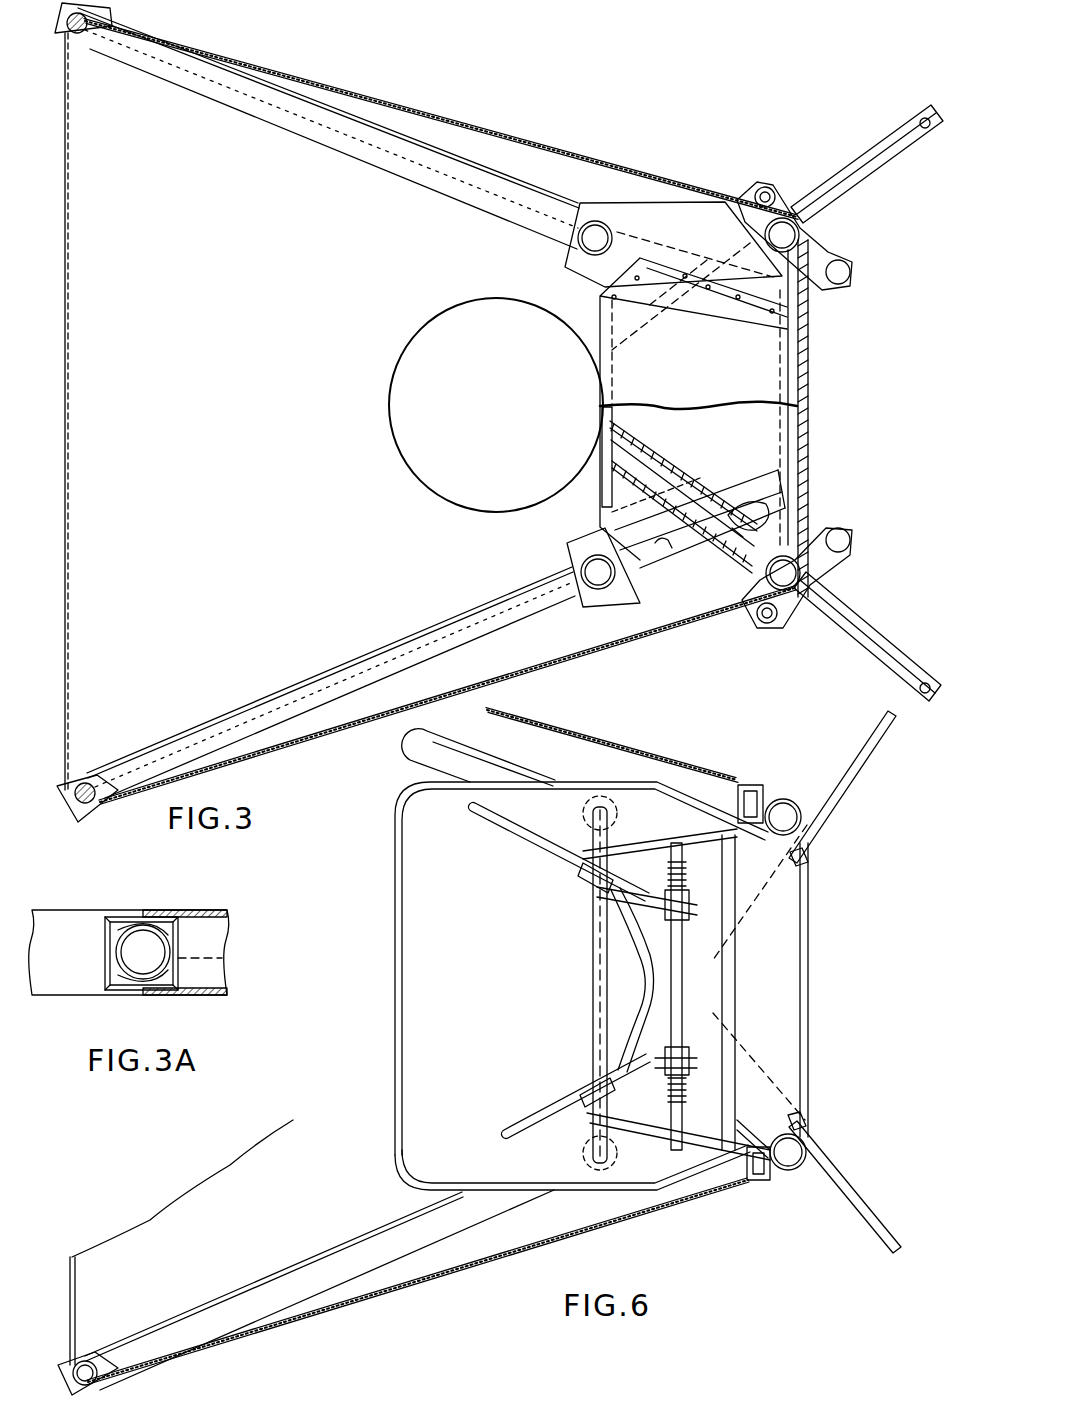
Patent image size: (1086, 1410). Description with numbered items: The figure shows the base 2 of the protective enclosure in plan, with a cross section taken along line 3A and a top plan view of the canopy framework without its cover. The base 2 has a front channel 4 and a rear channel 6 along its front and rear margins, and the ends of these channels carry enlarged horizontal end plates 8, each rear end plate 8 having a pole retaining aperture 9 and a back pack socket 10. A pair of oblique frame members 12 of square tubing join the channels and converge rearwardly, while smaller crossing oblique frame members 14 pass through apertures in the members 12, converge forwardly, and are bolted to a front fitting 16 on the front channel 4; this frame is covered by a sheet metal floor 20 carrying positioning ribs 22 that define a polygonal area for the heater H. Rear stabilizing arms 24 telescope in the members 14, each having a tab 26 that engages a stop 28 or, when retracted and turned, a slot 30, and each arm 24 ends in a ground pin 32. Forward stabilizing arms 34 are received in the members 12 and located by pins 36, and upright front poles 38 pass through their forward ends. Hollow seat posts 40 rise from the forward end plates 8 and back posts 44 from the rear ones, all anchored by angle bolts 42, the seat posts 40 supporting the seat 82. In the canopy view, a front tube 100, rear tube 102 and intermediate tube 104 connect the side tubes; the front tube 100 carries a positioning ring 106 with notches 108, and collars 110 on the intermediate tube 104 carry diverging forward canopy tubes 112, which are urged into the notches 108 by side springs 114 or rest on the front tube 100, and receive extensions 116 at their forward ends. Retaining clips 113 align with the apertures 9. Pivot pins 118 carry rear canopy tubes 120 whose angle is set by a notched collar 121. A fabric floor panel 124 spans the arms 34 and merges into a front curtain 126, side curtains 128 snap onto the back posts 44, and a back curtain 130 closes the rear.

In FIG. 3, the base 2 is at (590, 480).
In FIG. 3, the section line 3A— 3A is at (778, 484).
In FIG. 3, the front channel 4 is at (595, 330).
In FIG. 3, the rear channel 6 is at (790, 430).
In FIG. 3, the end plate 8 is at (600, 200).
In FIG. 3, the pole retaining aperture 9 is at (755, 197).
In FIG. 3, the back pack socket 10 is at (850, 272).
In FIG. 3, the oblique frame member 12 is at (723, 490).
In FIG. 3A, the oblique frame member 12 is at (72, 910).
In FIG. 3, the crossing oblique frame member 14 is at (675, 465).
In FIG. 3A, the crossing oblique frame member 14 is at (108, 960).
In FIG. 3, the front fitting 16 is at (600, 443).
In FIG. 3, the sheet metal floor 20 is at (770, 364).
In FIG. 3, the positioning rib 22 is at (670, 290).
In FIG. 3, the rear stabilizing arm 24 is at (870, 145).
In FIG. 3A, the rear stabilizing arm 24 is at (118, 985).
In FIG. 3, the tab 26 is at (762, 500).
In FIG. 3A, the tab 26 is at (155, 928).
In FIG. 3, the stop 28 is at (770, 590).
In FIG. 3, the slot 30 is at (637, 410).
In FIG. 3, the ground pin 32 is at (925, 115).
In FIG. 3, the forward stabilizing arm 34 is at (257, 110).
In FIG. 6, the forward stabilizing arm 34 is at (300, 1260).
In FIG. 3, the pin 36 is at (665, 550).
In FIG. 3, the front pole 38 is at (80, 42).
In FIG. 6, the front pole 38 is at (88, 1373).
In FIG. 3, the seat post 40 is at (578, 238).
In FIG. 3, the angle bolt 42 is at (612, 220).
In FIG. 3, the back post 44 is at (805, 225).
In FIG. 6, the seat 82 is at (405, 1050).
In FIG. 6, the front tube 100 is at (592, 985).
In FIG. 6, the positioning ring 106 is at (597, 1018).
In FIG. 6, the rear tube 102 is at (690, 992).
In FIG. 6, the intermediate tube 104 is at (690, 960).
In FIG. 6, the notch 108 is at (628, 885).
In FIG. 6, the collar 110 is at (690, 922).
In FIG. 6, the forward canopy tube 112 is at (592, 878).
In FIG. 6, the retaining clip 113 is at (742, 785).
In FIG. 6, the side spring 114 is at (712, 850).
In FIG. 6, the extension 116 is at (530, 845).
In FIG. 6, the pivot pin 118 is at (762, 800).
In FIG. 6, the rear canopy tube 120 is at (850, 780).
In FIG. 6, the notched collar 121 is at (808, 858).
In FIG. 3, the floor panel 124 is at (250, 336).
In FIG. 6, the floor panel 124 is at (155, 1212).
In FIG. 3, the front curtain 126 is at (70, 318).
In FIG. 6, the front curtain 126 is at (78, 1307).
In FIG. 3, the side curtain 128 is at (445, 112).
In FIG. 6, the side curtain 128 is at (582, 745).
In FIG. 3, the back curtain 130 is at (812, 335).
In FIG. 6, the back curtain 130 is at (812, 940).
In FIG. 3, the heater H is at (498, 398).